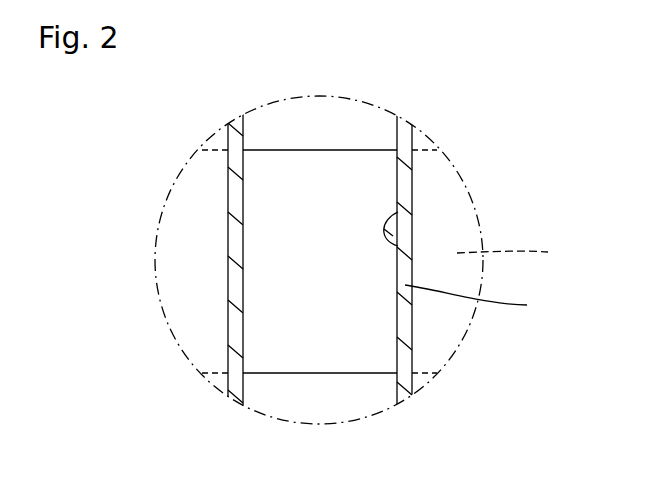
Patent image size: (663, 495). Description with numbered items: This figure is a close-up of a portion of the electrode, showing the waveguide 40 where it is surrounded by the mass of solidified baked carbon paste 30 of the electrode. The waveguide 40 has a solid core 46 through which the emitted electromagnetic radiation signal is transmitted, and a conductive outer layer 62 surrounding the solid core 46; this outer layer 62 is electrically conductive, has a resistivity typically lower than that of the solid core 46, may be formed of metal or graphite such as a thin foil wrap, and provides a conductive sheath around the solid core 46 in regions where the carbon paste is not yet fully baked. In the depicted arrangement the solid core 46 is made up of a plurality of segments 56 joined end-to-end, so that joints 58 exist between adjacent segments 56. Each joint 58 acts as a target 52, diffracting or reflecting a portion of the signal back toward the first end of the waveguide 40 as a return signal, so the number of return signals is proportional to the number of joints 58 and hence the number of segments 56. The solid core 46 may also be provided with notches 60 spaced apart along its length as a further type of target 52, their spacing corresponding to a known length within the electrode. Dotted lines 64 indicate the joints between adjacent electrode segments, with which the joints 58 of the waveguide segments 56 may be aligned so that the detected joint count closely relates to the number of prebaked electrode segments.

The baked carbon paste 30 is at (519, 254).
The waveguide 40 is at (319, 229).
The solid core 46 is at (335, 122).
The target 52 is at (357, 150).
The segments 56 is at (271, 120).
The joints 58 is at (406, 216).
The notches 60 is at (400, 214).
The conductive outer layer 62 is at (483, 299).
The dotted lines 64 is at (222, 150).